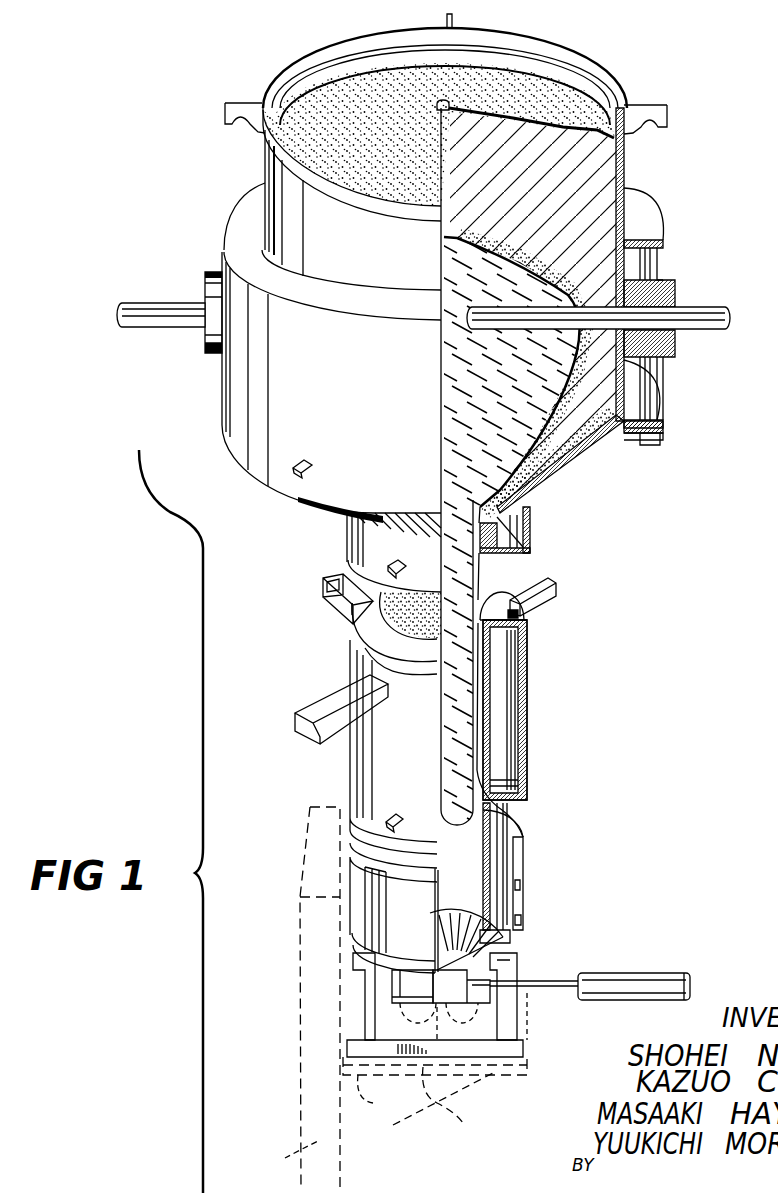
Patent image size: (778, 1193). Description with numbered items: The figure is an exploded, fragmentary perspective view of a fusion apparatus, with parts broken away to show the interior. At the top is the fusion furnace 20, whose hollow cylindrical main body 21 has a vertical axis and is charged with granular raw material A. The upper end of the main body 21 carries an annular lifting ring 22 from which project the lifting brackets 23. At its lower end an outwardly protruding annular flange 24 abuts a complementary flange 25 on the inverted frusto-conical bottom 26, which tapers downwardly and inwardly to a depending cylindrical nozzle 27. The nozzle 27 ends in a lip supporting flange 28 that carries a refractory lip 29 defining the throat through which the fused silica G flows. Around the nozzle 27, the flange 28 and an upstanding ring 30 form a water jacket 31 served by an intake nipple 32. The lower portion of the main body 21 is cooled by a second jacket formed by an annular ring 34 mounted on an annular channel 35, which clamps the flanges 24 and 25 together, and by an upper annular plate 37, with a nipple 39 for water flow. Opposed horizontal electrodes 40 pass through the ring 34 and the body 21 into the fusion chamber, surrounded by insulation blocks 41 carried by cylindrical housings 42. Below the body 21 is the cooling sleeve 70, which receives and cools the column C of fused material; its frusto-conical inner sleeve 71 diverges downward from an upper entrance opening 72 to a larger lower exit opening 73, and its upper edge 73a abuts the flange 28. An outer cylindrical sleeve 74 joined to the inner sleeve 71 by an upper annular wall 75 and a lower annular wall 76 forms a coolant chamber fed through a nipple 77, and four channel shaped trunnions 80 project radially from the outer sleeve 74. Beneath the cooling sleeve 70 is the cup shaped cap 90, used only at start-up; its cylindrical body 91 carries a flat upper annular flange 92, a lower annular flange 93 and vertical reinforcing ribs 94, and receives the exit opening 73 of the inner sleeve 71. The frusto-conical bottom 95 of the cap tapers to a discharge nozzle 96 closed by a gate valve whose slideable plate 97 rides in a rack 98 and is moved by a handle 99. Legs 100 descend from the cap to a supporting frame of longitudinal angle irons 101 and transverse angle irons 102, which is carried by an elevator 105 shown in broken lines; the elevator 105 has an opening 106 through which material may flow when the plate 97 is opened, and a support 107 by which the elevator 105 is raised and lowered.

The fusion furnace 20 is at (263, 157).
The main body 21 is at (283, 213).
The lifting ring 22 is at (520, 43).
The lifting brackets 23 is at (237, 107).
The annular flange 24 is at (647, 443).
The complementary flange 25 is at (452, 16).
The bottom 26 is at (572, 470).
The nozzle 27 is at (505, 523).
The lip supporting flange 28 is at (500, 556).
The lip 29 is at (486, 669).
The ring 30 is at (527, 552).
The water jacket 31 is at (528, 535).
The intake nipple 32 is at (393, 570).
The annular ring 34 is at (663, 250).
The annular channel 35 is at (663, 440).
The upper annular plate 37 is at (640, 220).
The outlet nipple 39 is at (305, 462).
The electrodes 40 is at (713, 317).
The insulation blocks 41 is at (678, 287).
The housings 42 is at (210, 327).
The cooling sleeve 70 is at (530, 697).
The inner sleeve 71 is at (486, 677).
The upper entrance opening 72 is at (484, 600).
The lower exit opening 73 is at (413, 747).
The upper edge 73a is at (433, 637).
The outer cylindrical sleeve 74 is at (527, 753).
The upper annular wall 75 is at (518, 614).
The lower annular wall 76 is at (525, 773).
The nipple 77 is at (390, 818).
The trunnions 80 is at (325, 600).
The cup shaped cap 90 is at (523, 823).
The cylindrical body 91 is at (507, 887).
The upper annular flange 92 is at (525, 810).
The lower annular flange 93 is at (352, 940).
The reinforcing ribs 94 is at (386, 908).
The frusto-conical bottom 95 is at (463, 923).
The discharge nozzle 96 is at (437, 970).
The slideable plate 97 is at (461, 1003).
The rack 98 is at (413, 1005).
The handle 99 is at (633, 983).
The legs 100 is at (370, 1020).
The longitudinal angle irons 101 is at (350, 1050).
The transverse angle irons 102 is at (365, 1000).
The elevator 105 is at (351, 998).
The opening 106 is at (444, 1104).
The support 107 is at (288, 1158).
The raw material A is at (560, 127).
The column of fused silica C is at (450, 697).
The fused silica G is at (447, 397).